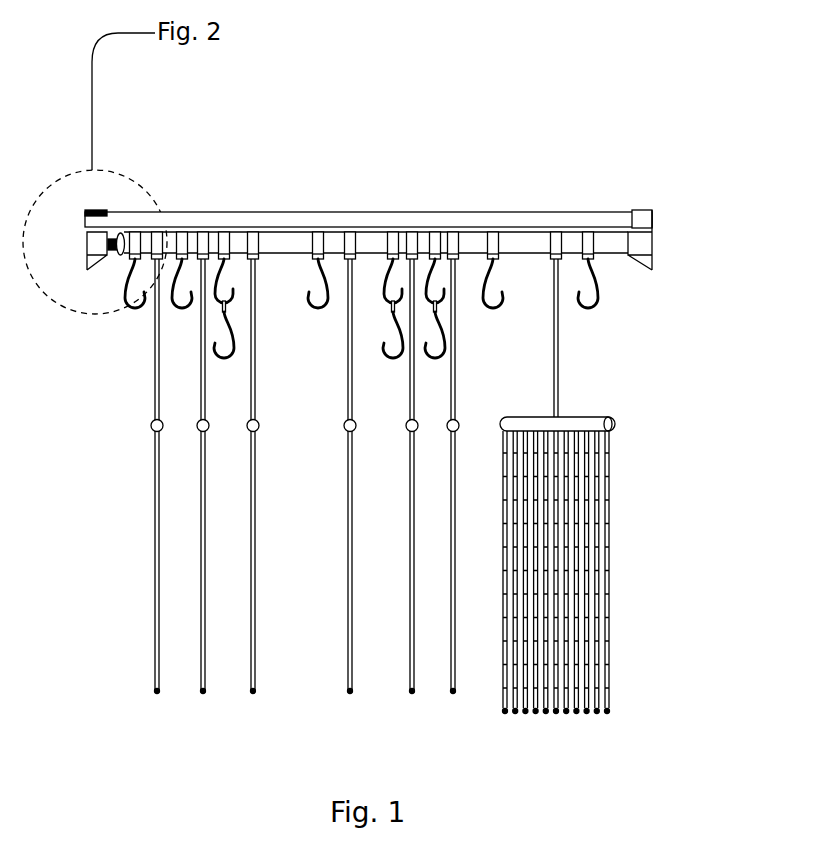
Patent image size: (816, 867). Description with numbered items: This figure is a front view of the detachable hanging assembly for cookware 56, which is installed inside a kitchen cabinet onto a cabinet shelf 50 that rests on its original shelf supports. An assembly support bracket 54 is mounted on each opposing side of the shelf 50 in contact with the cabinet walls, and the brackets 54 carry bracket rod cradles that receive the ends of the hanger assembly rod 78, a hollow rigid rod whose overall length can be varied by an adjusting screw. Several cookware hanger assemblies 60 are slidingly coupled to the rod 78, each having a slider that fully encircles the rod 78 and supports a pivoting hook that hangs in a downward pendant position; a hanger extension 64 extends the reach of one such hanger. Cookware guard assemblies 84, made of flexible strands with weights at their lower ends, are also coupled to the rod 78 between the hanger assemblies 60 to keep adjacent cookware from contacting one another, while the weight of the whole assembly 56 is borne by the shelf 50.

The cabinet shelf 50 is at (213, 222).
The assembly support bracket 54 is at (640, 245).
The detachable hanging assembly for cookware 56 is at (621, 281).
The cookware hanger assembly 60 is at (182, 243).
The hanger extension 64 is at (226, 358).
The hanger assembly rod 78 is at (612, 242).
The cookware guard assembly 84 is at (253, 248).